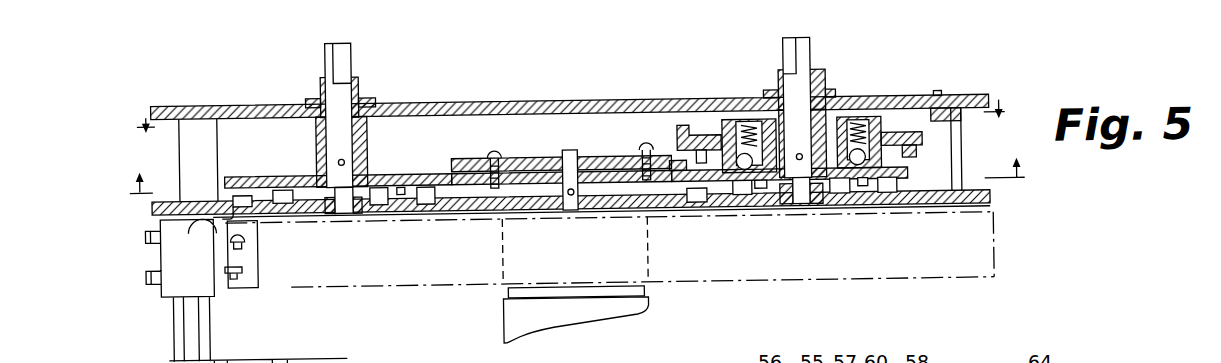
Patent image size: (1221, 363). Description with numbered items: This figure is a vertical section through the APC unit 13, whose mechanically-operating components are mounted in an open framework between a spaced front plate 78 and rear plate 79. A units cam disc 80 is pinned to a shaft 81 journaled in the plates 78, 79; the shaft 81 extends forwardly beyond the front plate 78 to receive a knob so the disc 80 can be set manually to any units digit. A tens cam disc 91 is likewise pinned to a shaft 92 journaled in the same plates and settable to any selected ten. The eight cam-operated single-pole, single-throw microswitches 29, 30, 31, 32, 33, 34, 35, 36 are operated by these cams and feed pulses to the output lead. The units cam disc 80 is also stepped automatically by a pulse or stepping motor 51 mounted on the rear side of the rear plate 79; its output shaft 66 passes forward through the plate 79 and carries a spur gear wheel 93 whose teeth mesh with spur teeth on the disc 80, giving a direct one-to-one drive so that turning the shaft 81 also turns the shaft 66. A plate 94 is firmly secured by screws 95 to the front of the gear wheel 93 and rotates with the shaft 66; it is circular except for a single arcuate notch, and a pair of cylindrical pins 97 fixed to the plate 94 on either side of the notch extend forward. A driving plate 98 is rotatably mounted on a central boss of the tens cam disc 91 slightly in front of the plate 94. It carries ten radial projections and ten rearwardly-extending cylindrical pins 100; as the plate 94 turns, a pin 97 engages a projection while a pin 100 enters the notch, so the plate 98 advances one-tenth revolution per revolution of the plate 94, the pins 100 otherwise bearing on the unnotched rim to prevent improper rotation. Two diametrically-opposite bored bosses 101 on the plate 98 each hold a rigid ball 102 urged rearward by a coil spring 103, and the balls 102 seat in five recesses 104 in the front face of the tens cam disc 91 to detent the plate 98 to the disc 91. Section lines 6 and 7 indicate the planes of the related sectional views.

The section line 6- 6 is at (576, 167).
The section line 7- 7 is at (571, 128).
The APC unit 13 is at (567, 98).
The switch 29 is at (236, 192).
The switch 30 is at (282, 186).
The switch 31 is at (380, 203).
The switch 32 is at (428, 203).
The switch 33 is at (695, 205).
The switch 34 is at (750, 194).
The switch 35 is at (836, 198).
The switch 36 is at (888, 198).
The pulse or stepping motor 51 is at (518, 319).
The motor output shaft 66 is at (572, 157).
The front plate 78 is at (980, 102).
The rear plate 79 is at (990, 205).
The units cam disc 80 is at (420, 176).
The shaft 81 is at (340, 97).
The tens cam disc 91 is at (720, 186).
The shaft 92 is at (805, 83).
The spur gear wheel 93 is at (533, 178).
The plate 94 is at (615, 166).
The screws 95 is at (495, 159).
The cylindrical pins 97 is at (690, 136).
The driving plate 98 is at (920, 146).
The cylindrical pins 100 is at (702, 150).
The bored cylindrical bosses 101 is at (728, 125).
The ball 102 is at (758, 192).
The coil spring 103 is at (745, 124).
The recesses 104 is at (740, 198).